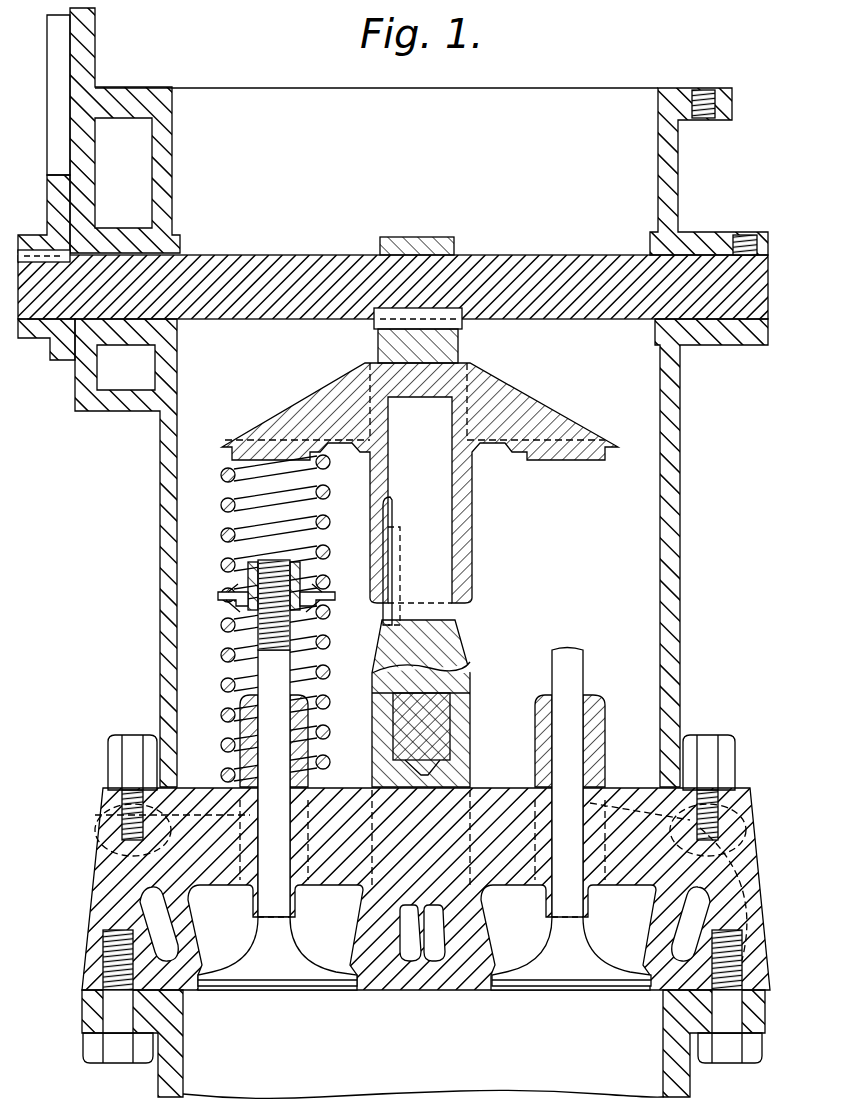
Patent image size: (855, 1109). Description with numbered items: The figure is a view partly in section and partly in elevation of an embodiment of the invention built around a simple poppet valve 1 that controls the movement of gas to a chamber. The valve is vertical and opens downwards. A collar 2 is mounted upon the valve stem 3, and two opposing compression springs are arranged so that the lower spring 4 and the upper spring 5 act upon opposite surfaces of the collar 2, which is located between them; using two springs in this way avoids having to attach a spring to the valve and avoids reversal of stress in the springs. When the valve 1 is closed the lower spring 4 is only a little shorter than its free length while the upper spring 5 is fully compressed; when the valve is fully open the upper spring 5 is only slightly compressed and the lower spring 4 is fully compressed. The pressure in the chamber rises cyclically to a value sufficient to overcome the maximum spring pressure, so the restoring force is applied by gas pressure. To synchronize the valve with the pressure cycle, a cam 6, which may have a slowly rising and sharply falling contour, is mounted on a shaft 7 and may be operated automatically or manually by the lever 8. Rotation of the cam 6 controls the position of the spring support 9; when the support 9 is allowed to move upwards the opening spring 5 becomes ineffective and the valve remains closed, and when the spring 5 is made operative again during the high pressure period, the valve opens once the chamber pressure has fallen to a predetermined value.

The poppet valve 1 is at (290, 987).
The collar 2 is at (218, 597).
The valve stem 3 is at (272, 682).
The lower spring 4 is at (220, 655).
The upper spring 5 is at (220, 503).
The cam 6 is at (378, 350).
The shaft 7 is at (536, 262).
The lever 8 is at (58, 78).
The spring support 9 is at (522, 416).